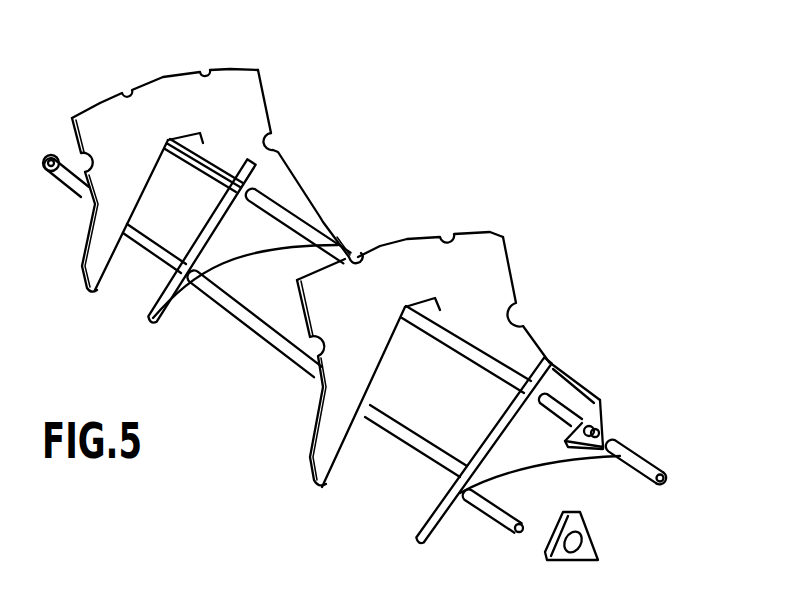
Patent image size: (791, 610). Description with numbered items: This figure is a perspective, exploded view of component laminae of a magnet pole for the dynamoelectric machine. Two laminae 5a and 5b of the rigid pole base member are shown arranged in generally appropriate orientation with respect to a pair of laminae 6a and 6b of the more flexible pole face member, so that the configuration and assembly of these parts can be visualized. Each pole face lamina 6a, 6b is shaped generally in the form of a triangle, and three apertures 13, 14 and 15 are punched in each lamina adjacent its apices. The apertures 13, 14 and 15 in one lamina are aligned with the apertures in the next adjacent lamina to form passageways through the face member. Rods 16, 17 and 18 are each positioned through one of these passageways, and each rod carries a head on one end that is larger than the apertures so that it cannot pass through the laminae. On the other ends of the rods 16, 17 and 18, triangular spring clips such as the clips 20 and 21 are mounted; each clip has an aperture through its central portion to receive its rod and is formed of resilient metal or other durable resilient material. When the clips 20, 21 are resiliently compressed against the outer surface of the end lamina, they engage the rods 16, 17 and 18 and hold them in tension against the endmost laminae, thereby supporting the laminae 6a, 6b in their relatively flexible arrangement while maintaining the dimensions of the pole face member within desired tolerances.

The lamina 5a is at (258, 70).
The lamina 5b is at (503, 237).
The lamina 6a is at (222, 205).
The lamina 6b is at (510, 410).
The aperture 13 is at (466, 490).
The aperture 14 is at (558, 367).
The aperture 15 is at (625, 432).
The rod 16 is at (415, 458).
The rod 17 is at (457, 347).
The rod 18 is at (658, 467).
The triangular spring clip 20 is at (597, 542).
The triangular spring clip 21 is at (600, 398).